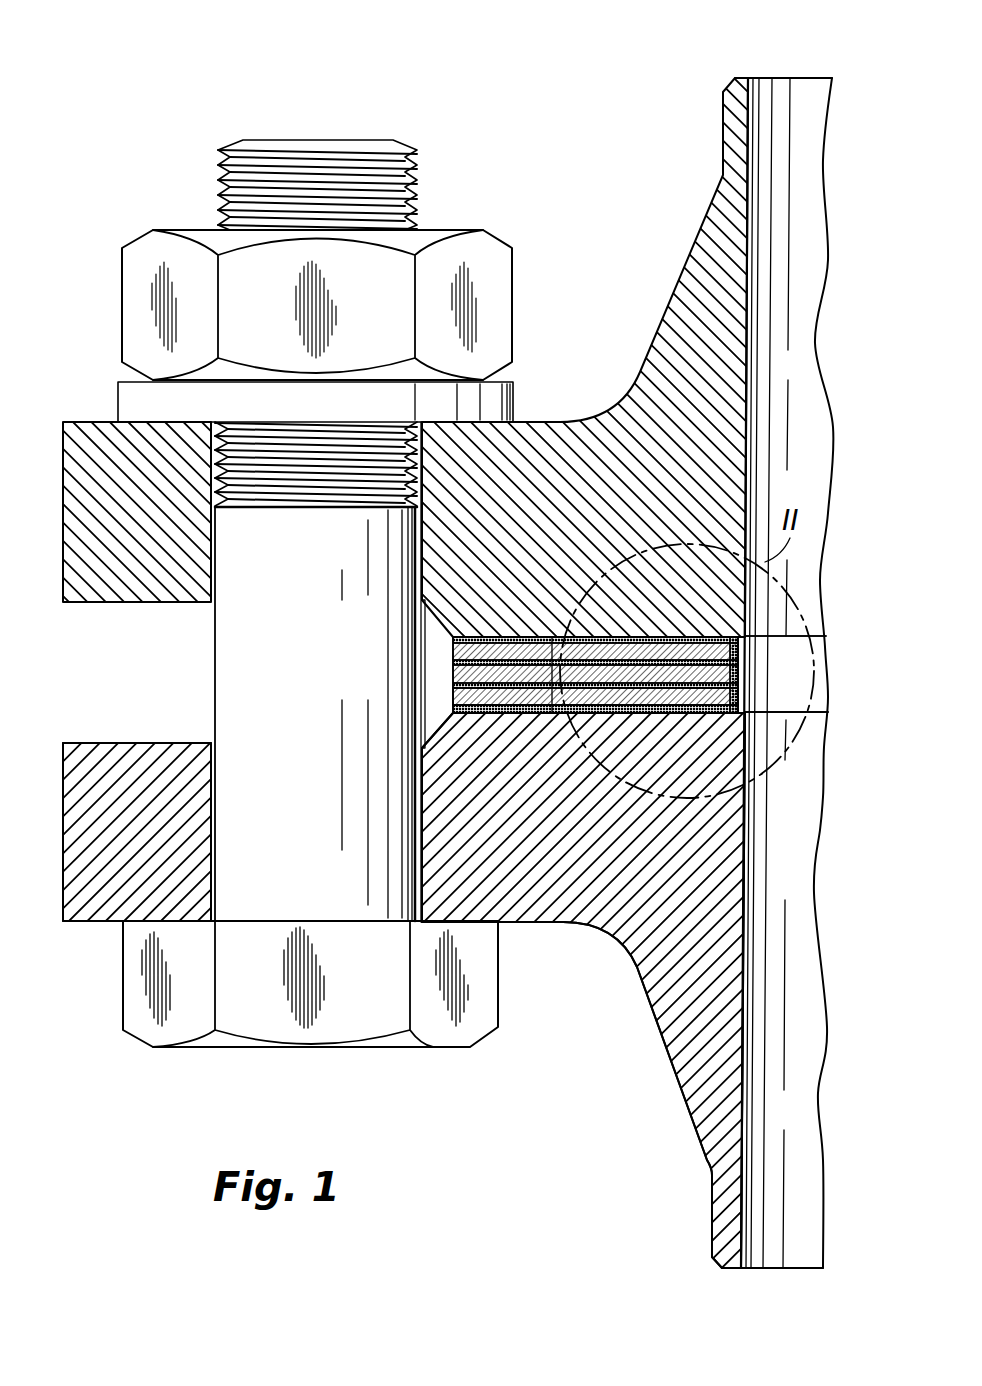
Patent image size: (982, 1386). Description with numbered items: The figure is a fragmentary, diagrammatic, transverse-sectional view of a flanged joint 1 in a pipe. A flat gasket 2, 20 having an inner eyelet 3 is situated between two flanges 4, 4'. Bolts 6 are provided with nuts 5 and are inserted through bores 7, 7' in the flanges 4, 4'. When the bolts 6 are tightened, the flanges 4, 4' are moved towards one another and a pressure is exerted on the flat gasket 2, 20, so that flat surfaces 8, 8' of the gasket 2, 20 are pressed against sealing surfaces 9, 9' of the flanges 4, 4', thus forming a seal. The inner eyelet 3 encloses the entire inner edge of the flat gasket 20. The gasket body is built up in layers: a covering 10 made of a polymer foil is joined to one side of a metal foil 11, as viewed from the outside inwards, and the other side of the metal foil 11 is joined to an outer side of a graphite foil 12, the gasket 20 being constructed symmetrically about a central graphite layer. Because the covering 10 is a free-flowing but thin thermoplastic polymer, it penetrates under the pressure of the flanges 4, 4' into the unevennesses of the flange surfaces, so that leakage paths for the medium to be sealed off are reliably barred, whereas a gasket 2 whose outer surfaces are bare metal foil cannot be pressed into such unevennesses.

The flanged joint 1 is at (358, 95).
The flat gasket 2 is at (777, 673).
The inner eyelet 3 is at (745, 672).
The flange 4 is at (491, 398).
The flange 4' is at (491, 983).
The nut 5 is at (130, 318).
The bolt 6 is at (130, 1003).
The bore 7 is at (202, 514).
The bore 7' is at (210, 828).
The flat surface 8 is at (595, 642).
The flat surface 8' is at (595, 733).
The sealing surface 9 is at (798, 652).
The sealing surface 9' is at (801, 695).
The covering 10 is at (452, 640).
The metal foil 11 is at (452, 648).
The graphite foil 12 is at (452, 656).
The flat gasket 20 is at (702, 730).